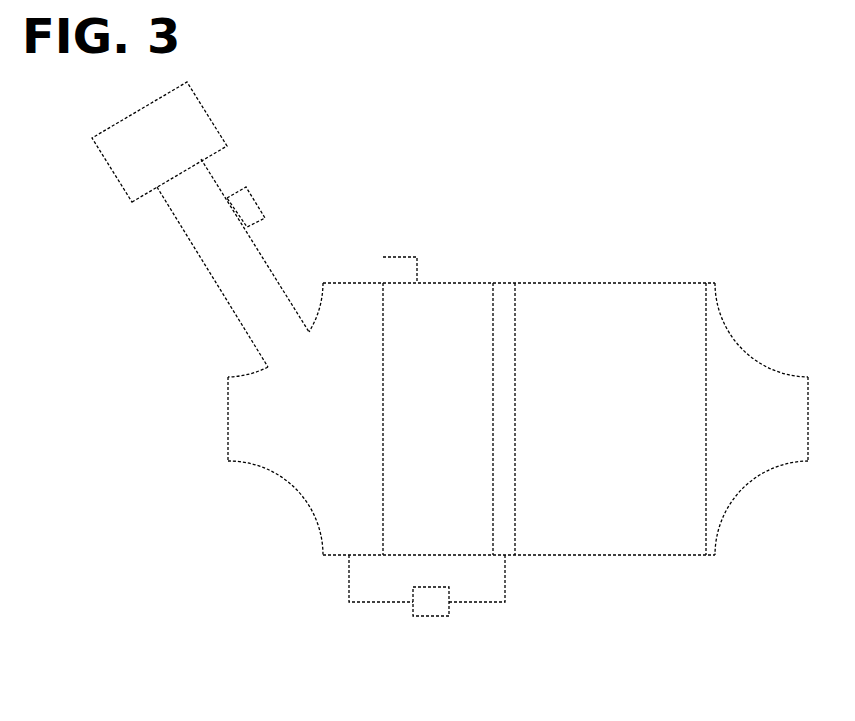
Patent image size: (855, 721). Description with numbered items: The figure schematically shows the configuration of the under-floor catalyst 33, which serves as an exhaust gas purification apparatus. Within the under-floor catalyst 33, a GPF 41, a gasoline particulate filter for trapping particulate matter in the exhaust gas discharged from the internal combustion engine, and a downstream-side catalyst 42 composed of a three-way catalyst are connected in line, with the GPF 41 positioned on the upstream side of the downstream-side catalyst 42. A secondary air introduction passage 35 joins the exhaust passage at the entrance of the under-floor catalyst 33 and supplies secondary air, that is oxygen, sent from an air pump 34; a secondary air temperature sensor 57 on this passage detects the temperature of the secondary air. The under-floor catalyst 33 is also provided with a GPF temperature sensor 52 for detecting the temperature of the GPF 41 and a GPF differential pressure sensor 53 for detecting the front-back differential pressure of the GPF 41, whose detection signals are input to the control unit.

The under-floor catalyst 33 is at (575, 210).
The air pump 34 is at (197, 122).
The secondary air introduction passage 35 is at (182, 228).
The GPF 41 is at (458, 303).
The downstream-side catalyst 42 is at (555, 300).
The GPF temperature sensor 52 is at (398, 255).
The GPF differential pressure sensor 53 is at (430, 617).
The secondary air temperature sensor 57 is at (260, 200).